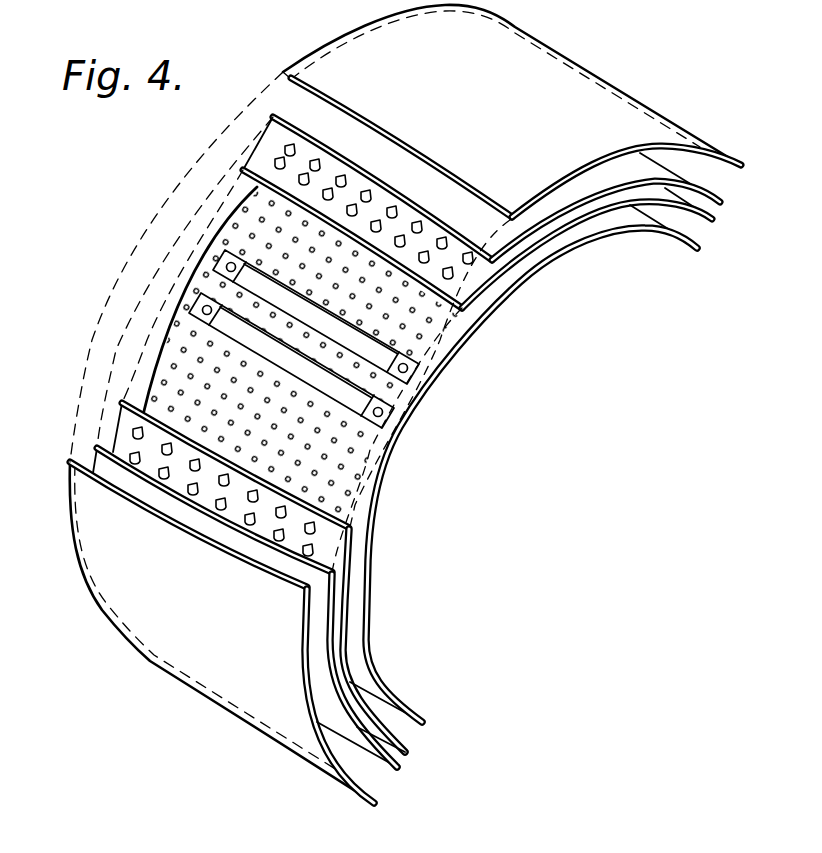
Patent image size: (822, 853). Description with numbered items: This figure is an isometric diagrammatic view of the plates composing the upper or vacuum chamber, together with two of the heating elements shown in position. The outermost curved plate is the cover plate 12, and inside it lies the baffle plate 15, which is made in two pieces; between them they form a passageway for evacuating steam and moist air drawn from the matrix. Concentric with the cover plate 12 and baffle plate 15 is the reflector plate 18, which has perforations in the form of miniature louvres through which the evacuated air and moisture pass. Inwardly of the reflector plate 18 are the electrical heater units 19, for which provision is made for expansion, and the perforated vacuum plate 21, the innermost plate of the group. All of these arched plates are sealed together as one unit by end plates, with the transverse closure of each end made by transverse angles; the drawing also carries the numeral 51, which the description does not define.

The cover plate 12 is at (355, 29).
The baffle plate 15 is at (557, 224).
The reflector plate 18 is at (497, 283).
The electrical heater units 19 is at (388, 423).
The perforated vacuum plate 21 is at (378, 533).
The intermediate strip 51 is at (336, 667).